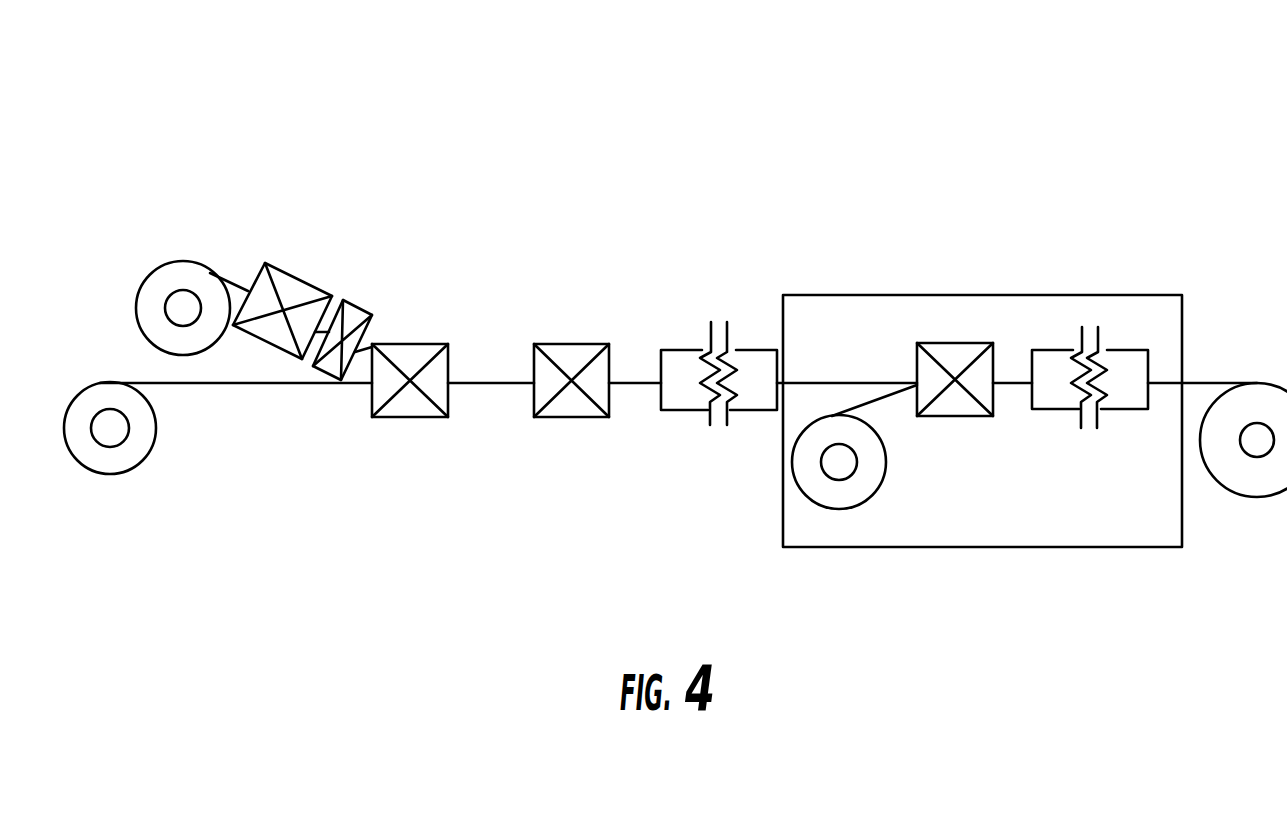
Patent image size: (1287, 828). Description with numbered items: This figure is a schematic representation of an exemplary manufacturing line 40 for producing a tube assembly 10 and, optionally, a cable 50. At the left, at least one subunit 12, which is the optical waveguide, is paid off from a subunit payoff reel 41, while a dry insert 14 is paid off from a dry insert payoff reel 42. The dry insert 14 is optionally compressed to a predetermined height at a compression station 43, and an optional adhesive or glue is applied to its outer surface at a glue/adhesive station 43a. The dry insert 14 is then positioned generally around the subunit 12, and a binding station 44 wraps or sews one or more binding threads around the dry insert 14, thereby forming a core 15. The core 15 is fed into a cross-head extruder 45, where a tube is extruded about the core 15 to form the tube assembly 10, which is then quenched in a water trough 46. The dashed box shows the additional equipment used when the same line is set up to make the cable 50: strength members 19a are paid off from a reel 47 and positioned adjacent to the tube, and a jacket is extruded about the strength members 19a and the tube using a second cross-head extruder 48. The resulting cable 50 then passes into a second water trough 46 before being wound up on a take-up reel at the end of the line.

The tube assembly 10 is at (632, 383).
The subunit 12 is at (203, 383).
The dry insert 14 is at (245, 288).
The core 15 is at (488, 383).
The strength members 19a is at (880, 402).
The manufacturing line 40 is at (1258, 497).
The subunit payoff reel 41 is at (110, 447).
The dry insert payoff reel 42 is at (157, 263).
The compression station 43 is at (302, 277).
The glue/adhesive station 43a is at (342, 303).
The binding station 44 is at (407, 345).
The cross-head extruder 45 is at (577, 343).
The water trough 46 is at (675, 410).
The reel 47 is at (868, 498).
The cross-head extruder 48 is at (937, 343).
The cable 50 is at (1012, 383).